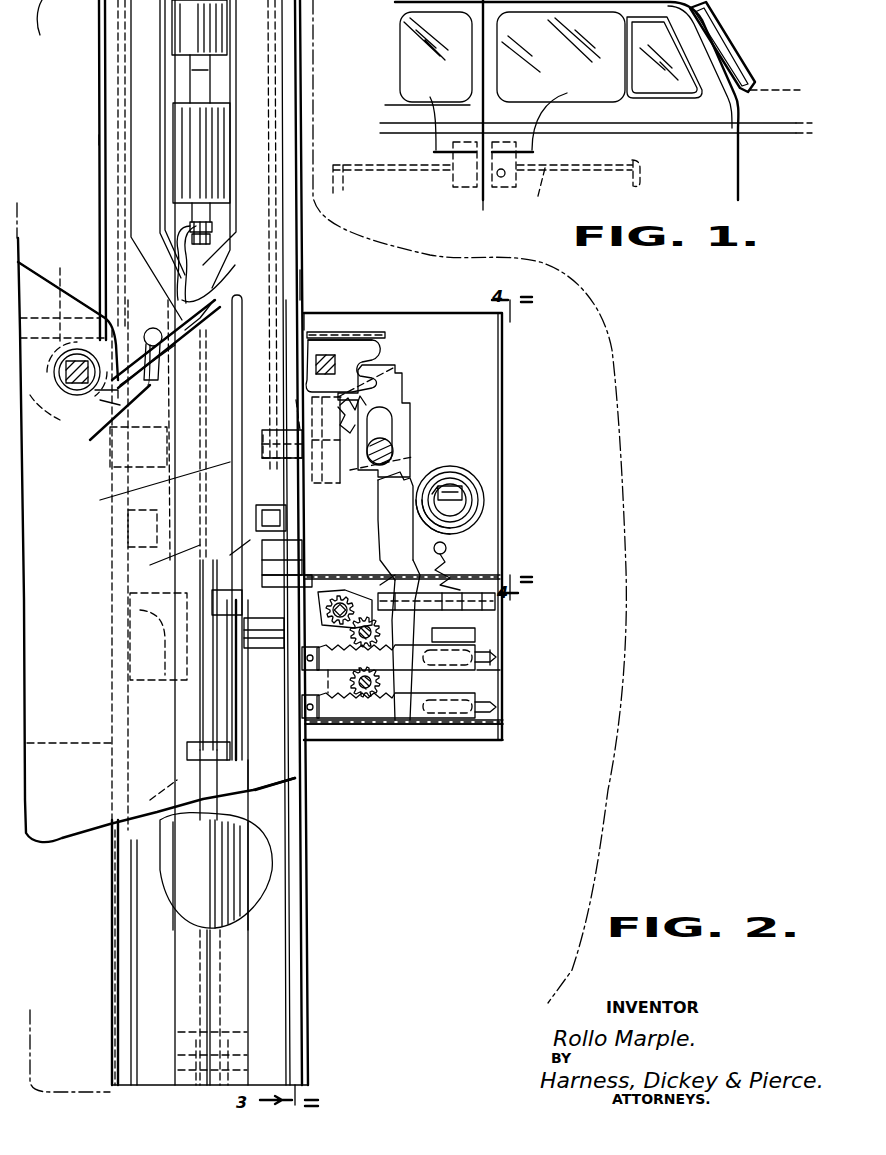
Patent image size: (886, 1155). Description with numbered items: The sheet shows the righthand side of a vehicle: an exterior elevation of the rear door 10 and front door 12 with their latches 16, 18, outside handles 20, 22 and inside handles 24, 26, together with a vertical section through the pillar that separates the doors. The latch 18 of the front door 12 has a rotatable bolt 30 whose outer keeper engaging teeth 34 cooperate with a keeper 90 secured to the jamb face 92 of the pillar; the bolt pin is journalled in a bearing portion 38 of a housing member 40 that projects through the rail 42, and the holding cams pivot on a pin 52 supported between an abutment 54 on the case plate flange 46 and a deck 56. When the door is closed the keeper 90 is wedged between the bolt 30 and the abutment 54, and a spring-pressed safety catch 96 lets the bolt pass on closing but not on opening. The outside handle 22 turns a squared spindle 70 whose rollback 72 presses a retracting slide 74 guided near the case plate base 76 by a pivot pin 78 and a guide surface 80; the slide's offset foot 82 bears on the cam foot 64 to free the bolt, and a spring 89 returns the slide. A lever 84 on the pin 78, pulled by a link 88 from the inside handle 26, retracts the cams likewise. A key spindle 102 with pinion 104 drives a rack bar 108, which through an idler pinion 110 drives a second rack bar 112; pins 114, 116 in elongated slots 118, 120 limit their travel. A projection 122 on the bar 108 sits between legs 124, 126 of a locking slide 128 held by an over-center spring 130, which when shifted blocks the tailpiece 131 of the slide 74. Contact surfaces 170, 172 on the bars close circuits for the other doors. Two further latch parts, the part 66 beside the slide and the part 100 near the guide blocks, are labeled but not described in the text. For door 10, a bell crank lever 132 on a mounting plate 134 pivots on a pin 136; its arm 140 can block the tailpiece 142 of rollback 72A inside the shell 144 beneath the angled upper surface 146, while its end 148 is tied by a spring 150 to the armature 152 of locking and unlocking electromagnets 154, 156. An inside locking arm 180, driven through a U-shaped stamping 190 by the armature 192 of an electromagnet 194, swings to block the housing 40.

In FIG. 1, the rear door 10 is at (445, 217).
In FIG. 1, the front door 12 is at (597, 201).
In FIG. 2, the front door 12 is at (303, 270).
In FIG. 1, the latch 16 is at (462, 140).
In FIG. 2, the latch 16 is at (62, 300).
In FIG. 1, the latch 18 is at (520, 140).
In FIG. 2, the latch 18 is at (474, 425).
In FIG. 1, the outside handle 20 is at (432, 102).
In FIG. 1, the outside handle 22 is at (560, 100).
In FIG. 1, the inside handle 24 is at (345, 190).
In FIG. 1, the inside handle 26 is at (642, 180).
In FIG. 1, the link 88 is at (530, 197).
In FIG. 2, the bolt 30 is at (386, 512).
In FIG. 2, the keeper engaging teeth 34 is at (282, 557).
In FIG. 2, the bearing portion 38 is at (152, 565).
In FIG. 2, the housing member 40 is at (232, 554).
In FIG. 2, the rail 42 is at (306, 300).
In FIG. 2, the flange 46 is at (312, 330).
In FIG. 2, the pin 52 is at (258, 425).
In FIG. 2, the abutment 54 is at (262, 395).
In FIG. 2, the deck 56 is at (350, 405).
In FIG. 2, the laterally extending foot 64 is at (405, 472).
In FIG. 2, the slide 66 is at (325, 478).
In FIG. 2, the squared spindle 70 is at (335, 360).
In FIG. 2, the rollback 72 is at (374, 352).
In FIG. 2, the rollback 72A is at (63, 381).
In FIG. 2, the retracting slide 74 is at (410, 415).
In FIG. 2, the case plate base 76 is at (500, 353).
In FIG. 2, the pivot pin 78 is at (393, 448).
In FIG. 2, the guide surface 80 is at (372, 583).
In FIG. 2, the laterally offset foot 82 is at (390, 368).
In FIG. 2, the lever 84 is at (378, 488).
In FIG. 2, the spring 89 is at (464, 500).
In FIG. 2, the keeper 90 is at (100, 500).
In FIG. 2, the jamb face 92 is at (243, 312).
In FIG. 2, the safety catch 96 is at (268, 506).
In FIG. 2, the plate 100 is at (286, 580).
In FIG. 2, the key spindle 102 is at (300, 655).
In FIG. 2, the pinion 104 is at (99, 135).
In FIG. 2, the rack bar 108 is at (478, 672).
In FIG. 2, the idler pinion 110 is at (380, 682).
In FIG. 2, the rack bar 112 is at (410, 730).
In FIG. 2, the pin 114 is at (498, 657).
In FIG. 2, the pin 116 is at (478, 730).
In FIG. 2, the elongated slot 118 is at (498, 660).
In FIG. 2, the elongated slot 120 is at (498, 707).
In FIG. 2, the upstanding projection 122 is at (495, 612).
In FIG. 2, the depending leg 124 is at (379, 642).
In FIG. 2, the depending leg 126 is at (476, 634).
In FIG. 2, the locking slide 128 is at (490, 598).
In FIG. 2, the over-center spring 130 is at (462, 560).
In FIG. 2, the tailpiece 131 is at (472, 480).
In FIG. 2, the bell crank lever 132 is at (190, 225).
In FIG. 2, the mounting plate 134 is at (115, 395).
In FIG. 2, the pin 136 is at (150, 328).
In FIG. 2, the arm 140 is at (96, 392).
In FIG. 2, the tailpiece 142 is at (100, 402).
In FIG. 2, the shell 144 is at (108, 450).
In FIG. 2, the angled upper surface 146 is at (172, 380).
In FIG. 2, the end of bell crank lever 148 is at (230, 290).
In FIG. 2, the spring 150 is at (235, 265).
In FIG. 2, the armature 152 is at (180, 265).
In FIG. 2, the locking electromagnet 154 is at (228, 130).
In FIG. 2, the unlocking electromagnet 156 is at (228, 28).
In FIG. 2, the contact surface 170 is at (283, 648).
In FIG. 2, the contact surface 172 is at (300, 705).
In FIG. 2, the locking arm 180 is at (222, 592).
In FIG. 2, the U-shaped stamping 190 is at (250, 775).
In FIG. 2, the armature 192 is at (258, 795).
In FIG. 2, the electromagnet 194 is at (272, 840).